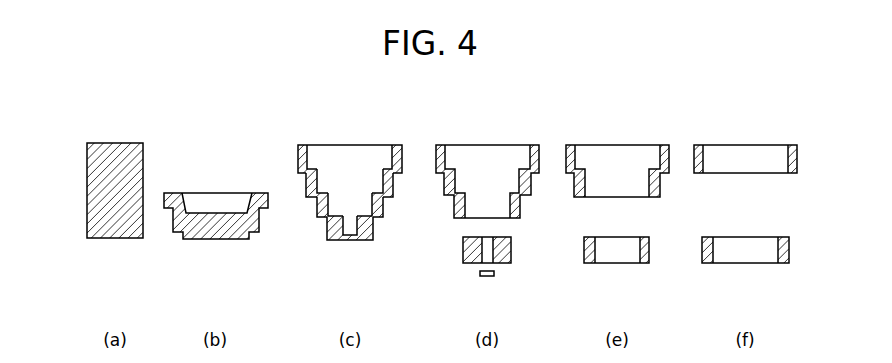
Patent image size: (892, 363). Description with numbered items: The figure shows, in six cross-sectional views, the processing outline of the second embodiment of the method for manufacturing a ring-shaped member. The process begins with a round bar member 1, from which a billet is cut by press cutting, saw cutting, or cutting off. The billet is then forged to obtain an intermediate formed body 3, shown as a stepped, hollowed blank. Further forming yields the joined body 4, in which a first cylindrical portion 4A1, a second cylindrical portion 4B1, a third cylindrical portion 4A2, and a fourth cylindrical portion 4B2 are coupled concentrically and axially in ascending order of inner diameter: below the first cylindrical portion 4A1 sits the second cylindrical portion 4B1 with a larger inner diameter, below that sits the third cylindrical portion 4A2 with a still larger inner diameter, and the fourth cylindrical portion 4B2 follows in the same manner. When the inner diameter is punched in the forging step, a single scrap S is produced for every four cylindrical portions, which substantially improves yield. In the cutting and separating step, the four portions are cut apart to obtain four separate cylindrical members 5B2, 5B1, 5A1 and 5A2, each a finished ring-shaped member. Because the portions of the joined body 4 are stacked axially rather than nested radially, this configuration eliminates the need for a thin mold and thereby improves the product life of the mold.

The round bar member 1 is at (123, 239).
The intermediate formed body 3 is at (232, 233).
The joined body 4 is at (335, 220).
The first cylindrical portion 4A1 is at (298, 153).
The third cylindrical portion 4A2 is at (306, 187).
The second cylindrical portion 4B1 is at (383, 203).
The fourth cylindrical portion 4B2 is at (373, 228).
The cylindrical member 5A1 is at (797, 167).
The cylindrical member 5A2 is at (788, 255).
The cylindrical member 5B1 is at (649, 255).
The cylindrical member 5B2 is at (510, 254).
The scrap S is at (479, 274).